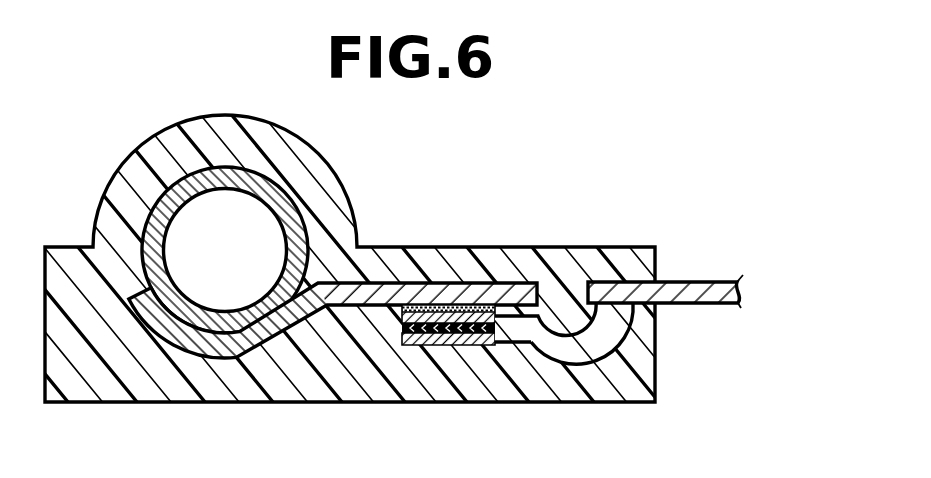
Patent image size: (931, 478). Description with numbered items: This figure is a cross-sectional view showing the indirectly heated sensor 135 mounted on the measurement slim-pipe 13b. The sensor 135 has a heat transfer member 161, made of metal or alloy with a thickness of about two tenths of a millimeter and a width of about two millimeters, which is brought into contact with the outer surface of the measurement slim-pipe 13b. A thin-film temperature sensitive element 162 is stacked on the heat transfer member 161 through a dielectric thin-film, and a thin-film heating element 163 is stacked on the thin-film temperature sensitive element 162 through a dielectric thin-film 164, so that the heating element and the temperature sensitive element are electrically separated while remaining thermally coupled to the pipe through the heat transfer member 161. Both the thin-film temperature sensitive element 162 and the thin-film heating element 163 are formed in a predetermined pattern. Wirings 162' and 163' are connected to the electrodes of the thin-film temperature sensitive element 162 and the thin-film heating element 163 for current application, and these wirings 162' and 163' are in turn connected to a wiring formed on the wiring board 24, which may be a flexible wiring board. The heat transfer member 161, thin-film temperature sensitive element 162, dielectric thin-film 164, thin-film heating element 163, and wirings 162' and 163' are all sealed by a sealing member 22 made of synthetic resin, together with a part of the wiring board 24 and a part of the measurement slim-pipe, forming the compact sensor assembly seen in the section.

The measurement slim-pipe 13b is at (270, 197).
The indirectly heated sensor 135 is at (432, 213).
The sealing member 22 is at (553, 260).
The wiring board 24 is at (694, 290).
The heat transfer member 161 is at (227, 345).
The thin-film temperature sensitive element 162 is at (402, 380).
The thin-film heating element 163 is at (461, 394).
The dielectric thin-film 164 is at (413, 335).
The wiring 162' is at (378, 282).
The wiring 163' is at (640, 339).